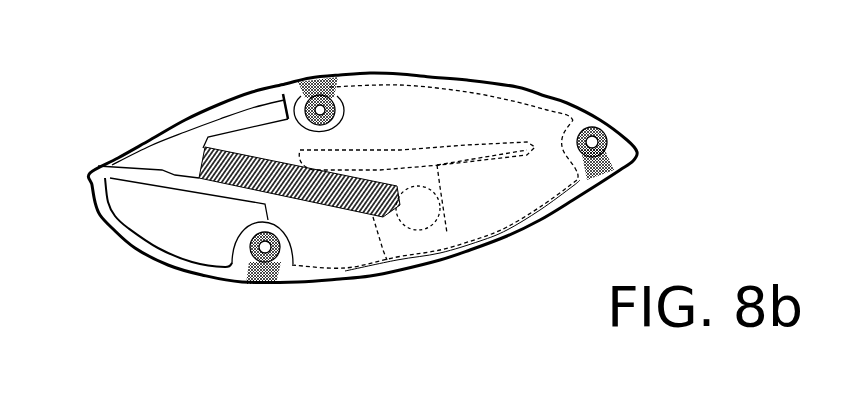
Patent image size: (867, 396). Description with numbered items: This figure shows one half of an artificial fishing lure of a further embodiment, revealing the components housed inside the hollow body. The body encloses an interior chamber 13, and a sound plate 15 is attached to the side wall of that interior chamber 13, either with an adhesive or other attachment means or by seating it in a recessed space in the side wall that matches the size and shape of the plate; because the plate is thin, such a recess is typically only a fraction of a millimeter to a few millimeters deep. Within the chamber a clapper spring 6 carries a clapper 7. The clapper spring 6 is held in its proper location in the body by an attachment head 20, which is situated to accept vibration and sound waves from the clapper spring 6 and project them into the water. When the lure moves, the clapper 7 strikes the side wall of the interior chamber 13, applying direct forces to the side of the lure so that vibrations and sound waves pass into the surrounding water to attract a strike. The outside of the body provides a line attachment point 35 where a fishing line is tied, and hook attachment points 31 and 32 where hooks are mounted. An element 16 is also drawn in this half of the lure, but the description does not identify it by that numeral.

The attachment head 20 is at (172, 138).
The lever arm 16 is at (175, 232).
The line attachment point 35 is at (295, 90).
The hook attachment point 31 is at (246, 281).
The hook attachment point 32 is at (594, 146).
The clapper spring 6 is at (328, 202).
The clapper 7 is at (410, 211).
The interior chamber 13 is at (493, 115).
The sound plate 15 is at (448, 233).